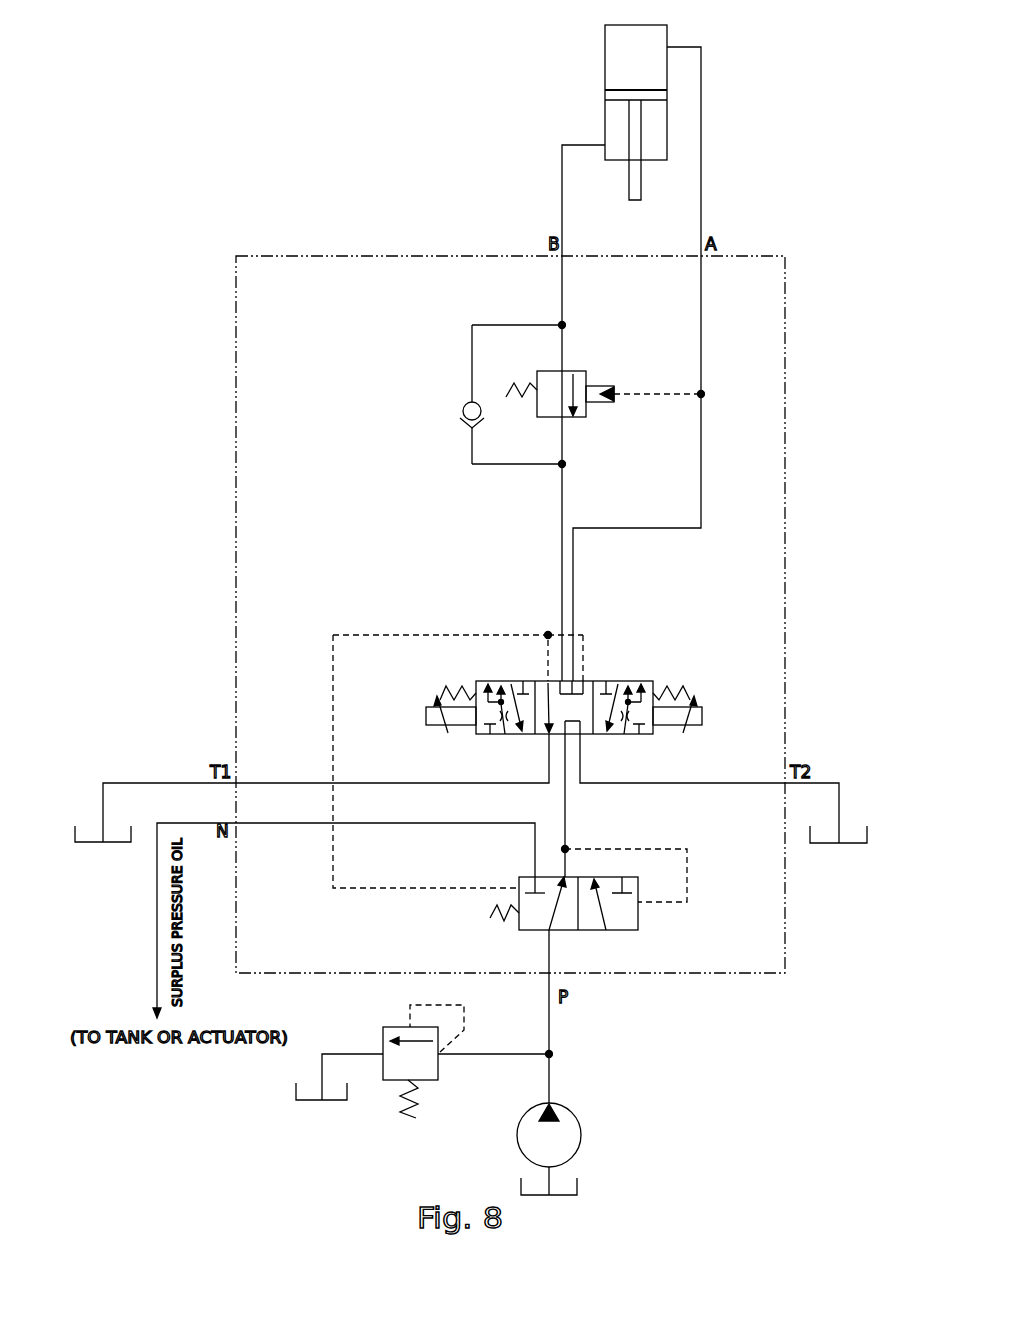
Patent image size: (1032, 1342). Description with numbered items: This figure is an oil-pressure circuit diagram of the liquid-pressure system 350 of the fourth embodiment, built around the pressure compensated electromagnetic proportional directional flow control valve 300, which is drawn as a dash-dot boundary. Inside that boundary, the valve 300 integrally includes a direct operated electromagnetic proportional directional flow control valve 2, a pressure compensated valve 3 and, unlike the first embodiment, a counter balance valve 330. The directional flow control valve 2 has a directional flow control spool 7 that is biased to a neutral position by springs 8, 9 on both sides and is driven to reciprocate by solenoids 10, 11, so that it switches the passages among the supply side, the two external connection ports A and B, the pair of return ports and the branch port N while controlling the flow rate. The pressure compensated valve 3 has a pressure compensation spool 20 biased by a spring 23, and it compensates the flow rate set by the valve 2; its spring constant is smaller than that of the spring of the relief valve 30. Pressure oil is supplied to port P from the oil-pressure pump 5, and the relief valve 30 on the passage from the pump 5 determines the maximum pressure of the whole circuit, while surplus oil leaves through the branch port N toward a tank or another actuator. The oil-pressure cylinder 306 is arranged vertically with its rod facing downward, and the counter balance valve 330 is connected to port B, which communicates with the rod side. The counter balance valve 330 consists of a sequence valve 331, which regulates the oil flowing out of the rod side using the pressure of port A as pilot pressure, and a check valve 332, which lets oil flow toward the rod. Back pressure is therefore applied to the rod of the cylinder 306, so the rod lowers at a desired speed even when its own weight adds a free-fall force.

The hydraulic circuit 350 is at (303, 143).
The pressure compensated electromagnetic proportional directional flow control valve 300 is at (229, 280).
The oil-pressure cylinder 306 is at (605, 62).
The counter balance valve 330 is at (559, 445).
The sequence valve 331 is at (548, 420).
The check valve 332 is at (463, 428).
The electromagnetic proportional directional flow control valve 2 is at (551, 737).
The directional flow control spool 7 is at (482, 735).
The spring 8 is at (683, 700).
The spring 9 is at (448, 692).
The solenoid 10 is at (703, 716).
The solenoid 11 is at (426, 716).
The pressure compensated valve 3 is at (605, 912).
The pressure compensation spool 20 is at (590, 932).
The spring 23 is at (508, 922).
The relief valve 30 is at (395, 1092).
The oil-pressure pump 5 is at (527, 1128).